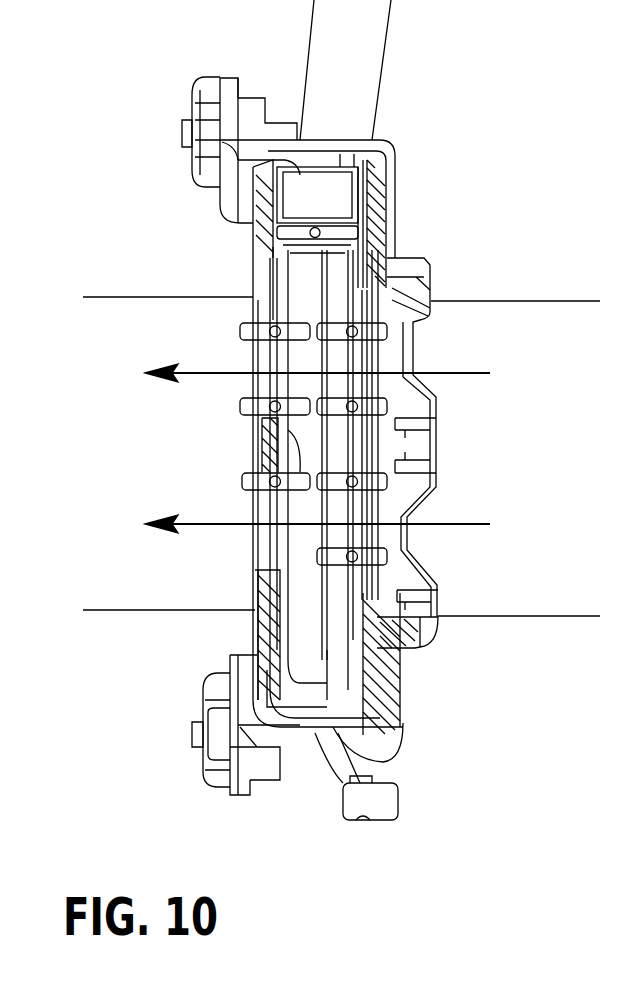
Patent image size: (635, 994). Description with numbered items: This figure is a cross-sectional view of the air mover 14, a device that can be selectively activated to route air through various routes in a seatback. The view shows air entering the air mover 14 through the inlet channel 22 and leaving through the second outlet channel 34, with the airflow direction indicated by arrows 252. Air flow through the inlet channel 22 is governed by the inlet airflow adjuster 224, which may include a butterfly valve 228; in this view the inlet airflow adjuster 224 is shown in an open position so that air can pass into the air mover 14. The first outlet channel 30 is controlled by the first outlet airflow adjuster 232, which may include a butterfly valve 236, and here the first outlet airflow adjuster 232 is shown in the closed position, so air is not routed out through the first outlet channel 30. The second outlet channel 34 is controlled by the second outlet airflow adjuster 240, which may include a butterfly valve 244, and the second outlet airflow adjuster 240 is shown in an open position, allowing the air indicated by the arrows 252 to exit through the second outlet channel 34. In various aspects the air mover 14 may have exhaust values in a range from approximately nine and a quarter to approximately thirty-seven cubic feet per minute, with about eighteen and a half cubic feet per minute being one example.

The air mover 14 is at (363, 193).
The inlet channel 22 is at (475, 320).
The first outlet channel 30 is at (348, 92).
The second outlet channel 34 is at (166, 309).
The inlet airflow adjuster 224 is at (398, 403).
The butterfly valve 228 is at (395, 555).
The first outlet airflow adjuster 232 is at (298, 190).
The butterfly valve 236 is at (291, 216).
The second outlet airflow adjuster 240 is at (246, 381).
The butterfly valve 244 is at (237, 481).
The arrows 252 is at (455, 368).